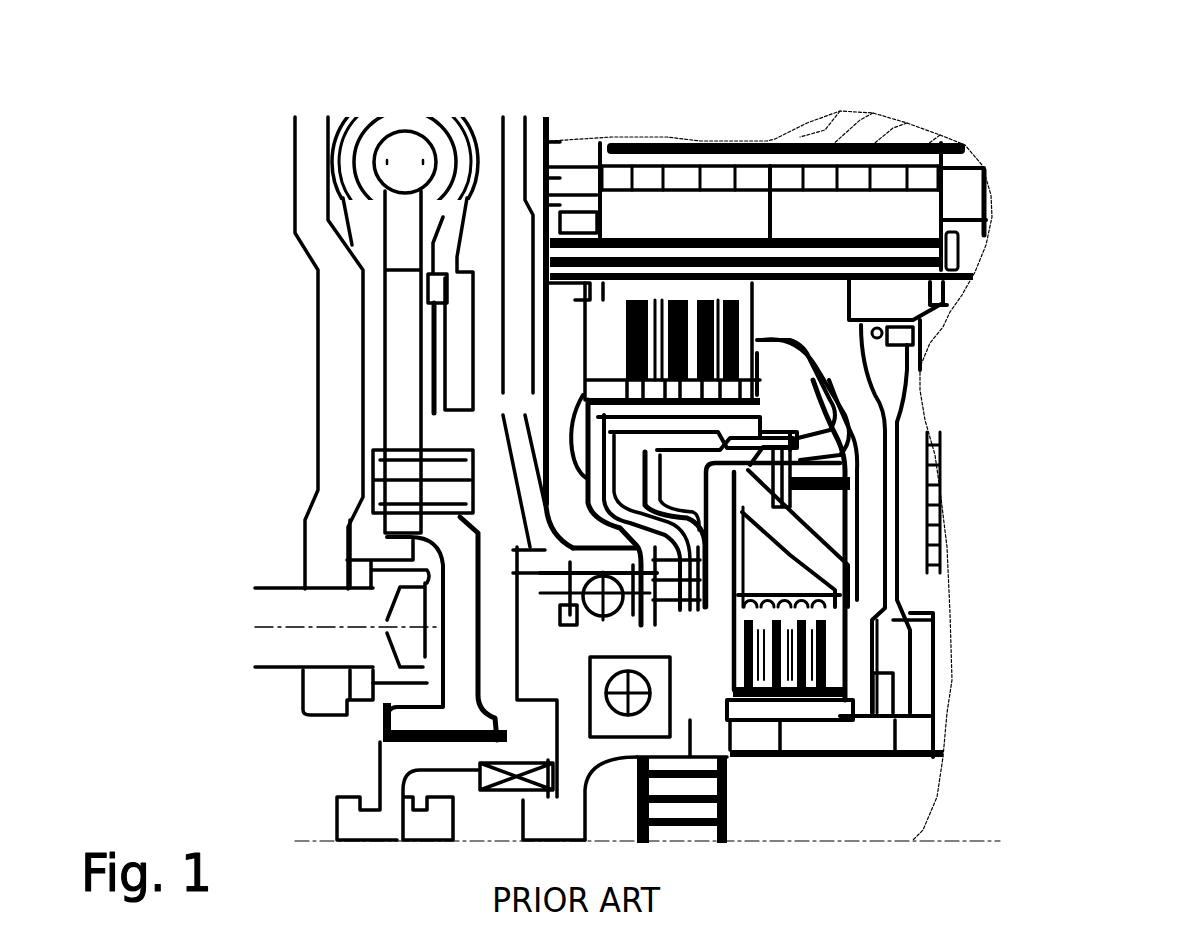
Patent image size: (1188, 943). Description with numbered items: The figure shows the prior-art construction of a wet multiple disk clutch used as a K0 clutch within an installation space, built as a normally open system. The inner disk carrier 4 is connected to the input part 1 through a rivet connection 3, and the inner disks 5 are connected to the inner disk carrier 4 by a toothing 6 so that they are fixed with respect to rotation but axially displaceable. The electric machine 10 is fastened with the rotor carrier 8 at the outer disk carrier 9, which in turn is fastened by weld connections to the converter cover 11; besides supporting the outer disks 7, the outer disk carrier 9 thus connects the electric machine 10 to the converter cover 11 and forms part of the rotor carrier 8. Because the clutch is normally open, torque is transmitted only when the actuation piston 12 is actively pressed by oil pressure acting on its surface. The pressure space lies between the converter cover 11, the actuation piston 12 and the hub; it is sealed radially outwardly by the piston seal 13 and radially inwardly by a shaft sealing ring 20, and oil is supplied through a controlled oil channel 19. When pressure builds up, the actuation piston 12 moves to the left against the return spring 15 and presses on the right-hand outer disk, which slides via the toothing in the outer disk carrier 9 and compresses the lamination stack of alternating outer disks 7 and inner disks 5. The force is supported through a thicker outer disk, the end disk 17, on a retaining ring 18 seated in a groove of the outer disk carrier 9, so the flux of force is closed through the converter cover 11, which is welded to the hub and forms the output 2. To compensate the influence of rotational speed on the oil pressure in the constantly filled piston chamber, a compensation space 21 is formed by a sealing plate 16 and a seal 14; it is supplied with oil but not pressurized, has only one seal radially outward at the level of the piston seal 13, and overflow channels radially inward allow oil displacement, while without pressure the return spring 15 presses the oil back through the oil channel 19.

The input part 1 is at (415, 745).
The output 2 is at (878, 747).
The rivet connection 3 is at (797, 577).
The inner disk carrier 4 is at (593, 448).
The inner disks 5 is at (738, 392).
The toothing 6 is at (620, 393).
The outer disks 7 is at (648, 295).
The rotor carrier 8 is at (905, 253).
The outer disk carrier 9 is at (847, 283).
The electric machine 10 is at (857, 180).
The converter cover 11 is at (875, 443).
The actuation piston 12 is at (832, 405).
The piston seal 13 is at (800, 513).
The seal 14 is at (905, 585).
The return spring 15 is at (795, 643).
The sealing plate 16 is at (597, 480).
The end disk 17 is at (608, 298).
The retaining ring 18 is at (588, 297).
The oil channel 19 is at (817, 745).
The shaft sealing ring 20 is at (817, 745).
The compensation space 21 is at (745, 592).